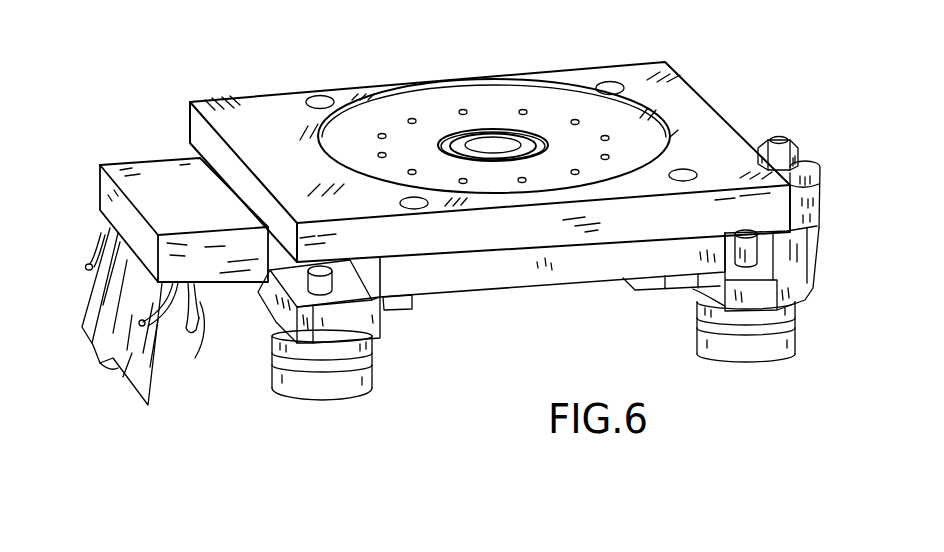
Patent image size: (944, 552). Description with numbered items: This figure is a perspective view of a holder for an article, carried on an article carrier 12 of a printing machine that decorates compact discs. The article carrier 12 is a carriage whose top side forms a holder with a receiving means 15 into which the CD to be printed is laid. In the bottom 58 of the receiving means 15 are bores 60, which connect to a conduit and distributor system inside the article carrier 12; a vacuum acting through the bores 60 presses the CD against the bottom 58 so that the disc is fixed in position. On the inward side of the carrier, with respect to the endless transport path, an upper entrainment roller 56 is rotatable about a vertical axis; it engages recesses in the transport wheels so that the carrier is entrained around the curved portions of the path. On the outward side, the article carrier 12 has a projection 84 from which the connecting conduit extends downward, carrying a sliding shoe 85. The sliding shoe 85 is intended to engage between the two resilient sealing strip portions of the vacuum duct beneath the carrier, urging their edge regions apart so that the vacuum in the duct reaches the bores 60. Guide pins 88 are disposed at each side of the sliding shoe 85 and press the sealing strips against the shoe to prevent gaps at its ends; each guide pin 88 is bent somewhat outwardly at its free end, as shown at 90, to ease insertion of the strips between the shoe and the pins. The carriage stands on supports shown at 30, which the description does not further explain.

The article carrier 12 is at (713, 99).
The receiving means 15 is at (567, 108).
The bottom 58 is at (363, 147).
The bores 60 is at (467, 110).
The entrainment roller 56 is at (818, 185).
The leveling feet 30 is at (327, 395).
The projection 84 is at (160, 177).
The sliding shoe 85 is at (116, 363).
The guide pins 88 is at (100, 237).
The outwardly bent free end 90 is at (86, 265).